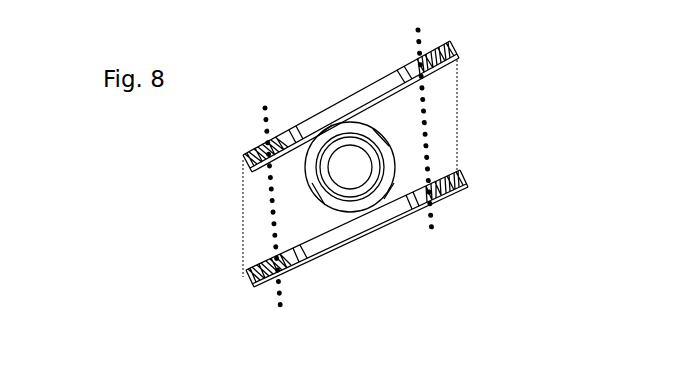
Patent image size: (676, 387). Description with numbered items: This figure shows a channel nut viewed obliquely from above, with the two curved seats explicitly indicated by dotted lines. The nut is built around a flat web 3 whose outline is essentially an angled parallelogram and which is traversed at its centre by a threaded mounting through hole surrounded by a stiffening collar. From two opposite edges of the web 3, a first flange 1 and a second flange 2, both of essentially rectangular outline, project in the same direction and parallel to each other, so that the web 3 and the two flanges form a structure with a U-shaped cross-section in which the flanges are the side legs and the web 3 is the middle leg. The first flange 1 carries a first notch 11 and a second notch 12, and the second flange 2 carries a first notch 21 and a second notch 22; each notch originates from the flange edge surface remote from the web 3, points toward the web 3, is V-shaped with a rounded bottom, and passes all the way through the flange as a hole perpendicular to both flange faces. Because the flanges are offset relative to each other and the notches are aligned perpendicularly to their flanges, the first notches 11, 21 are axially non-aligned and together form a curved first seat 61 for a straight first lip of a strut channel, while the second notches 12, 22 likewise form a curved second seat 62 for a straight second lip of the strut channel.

The first flange 1 is at (353, 260).
The second flange 2 is at (347, 136).
The web 3 is at (455, 67).
The first notch 11 is at (270, 302).
The second notch 12 is at (438, 198).
The first notch 21 is at (265, 178).
The second notch 22 is at (445, 77).
The first seat 61 is at (273, 245).
The second seat 62 is at (430, 142).